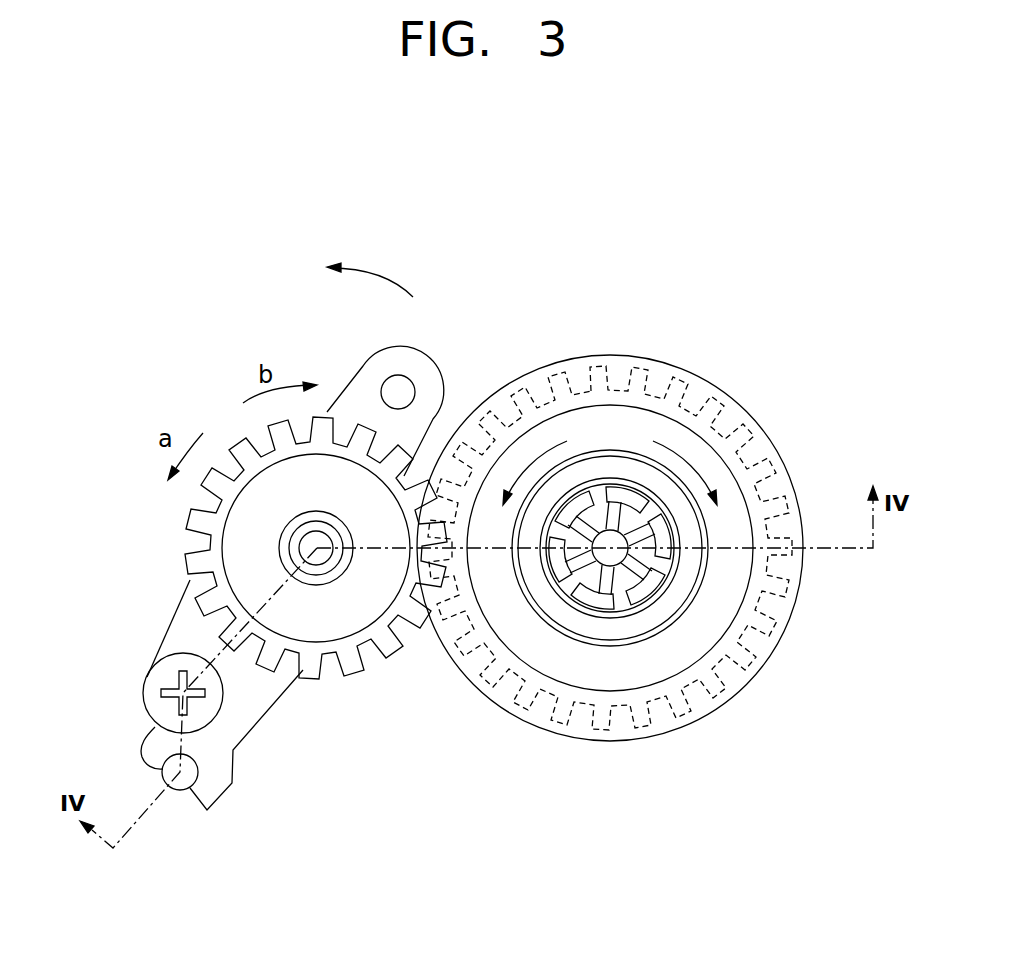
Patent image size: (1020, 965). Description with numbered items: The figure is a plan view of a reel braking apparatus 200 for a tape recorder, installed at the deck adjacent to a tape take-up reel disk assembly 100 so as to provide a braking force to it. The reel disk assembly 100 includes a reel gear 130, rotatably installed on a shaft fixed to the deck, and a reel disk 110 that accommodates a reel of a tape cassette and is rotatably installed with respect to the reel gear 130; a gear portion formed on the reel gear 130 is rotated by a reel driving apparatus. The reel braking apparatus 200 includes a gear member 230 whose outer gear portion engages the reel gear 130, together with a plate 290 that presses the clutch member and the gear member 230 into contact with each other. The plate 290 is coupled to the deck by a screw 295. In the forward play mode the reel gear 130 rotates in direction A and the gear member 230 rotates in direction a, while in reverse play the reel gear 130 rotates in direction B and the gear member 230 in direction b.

The tape take-up reel disk assembly 100 is at (706, 352).
The reel disk 110 is at (616, 428).
The reel gear 130 is at (760, 426).
The reel braking apparatus 200 is at (172, 546).
The gear member 230 is at (347, 622).
The plate 290 is at (240, 722).
The screw 295 is at (148, 693).